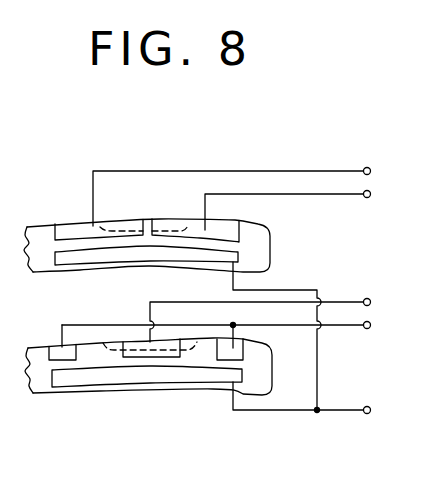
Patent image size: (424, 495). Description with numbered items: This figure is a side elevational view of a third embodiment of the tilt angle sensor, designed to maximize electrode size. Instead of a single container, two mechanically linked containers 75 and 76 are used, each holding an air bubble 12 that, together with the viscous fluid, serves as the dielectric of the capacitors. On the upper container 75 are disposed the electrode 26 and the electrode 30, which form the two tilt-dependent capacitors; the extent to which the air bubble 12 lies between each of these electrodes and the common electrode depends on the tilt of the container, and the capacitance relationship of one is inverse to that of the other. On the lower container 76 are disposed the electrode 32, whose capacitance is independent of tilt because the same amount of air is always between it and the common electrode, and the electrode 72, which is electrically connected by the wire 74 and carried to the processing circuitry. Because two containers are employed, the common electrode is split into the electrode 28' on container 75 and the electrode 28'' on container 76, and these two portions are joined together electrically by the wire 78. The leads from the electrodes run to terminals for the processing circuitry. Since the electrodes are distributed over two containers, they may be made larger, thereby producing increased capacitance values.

The first fluid 12 is at (147, 222).
The electrode 26 is at (230, 230).
The electrode 28' is at (146, 280).
The electrode 28'' is at (147, 404).
The electrode 30 is at (75, 226).
The electrode 32 is at (133, 342).
The electrode 72 is at (55, 346).
The wire 74 is at (255, 324).
The container 75 is at (263, 247).
The container 76 is at (263, 370).
The wire 78 is at (265, 412).